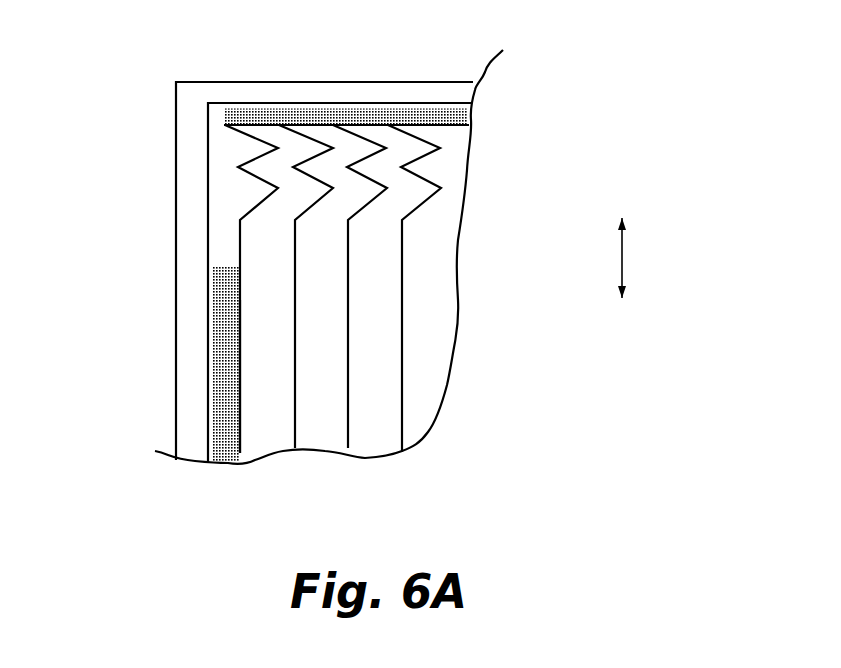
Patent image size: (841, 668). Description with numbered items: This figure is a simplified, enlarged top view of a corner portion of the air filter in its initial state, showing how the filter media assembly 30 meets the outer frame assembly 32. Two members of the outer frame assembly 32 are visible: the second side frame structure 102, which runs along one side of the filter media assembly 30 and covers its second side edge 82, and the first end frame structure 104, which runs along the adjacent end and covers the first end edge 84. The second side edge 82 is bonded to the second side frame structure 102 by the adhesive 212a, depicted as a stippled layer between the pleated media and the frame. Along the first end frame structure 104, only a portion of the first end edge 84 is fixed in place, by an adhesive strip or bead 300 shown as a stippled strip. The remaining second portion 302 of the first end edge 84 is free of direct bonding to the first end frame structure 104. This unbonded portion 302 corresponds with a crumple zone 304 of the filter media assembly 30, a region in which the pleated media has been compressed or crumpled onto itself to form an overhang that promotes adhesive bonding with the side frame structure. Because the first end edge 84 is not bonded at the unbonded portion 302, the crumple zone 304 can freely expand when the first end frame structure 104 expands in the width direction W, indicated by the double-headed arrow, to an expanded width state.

The filter media assembly 30 is at (418, 323).
The outer frame assembly 32 is at (158, 323).
The second side edge 82 is at (448, 125).
The first end edge 84 is at (242, 428).
The second side frame structure 102 is at (385, 75).
The first end frame structure 104 is at (195, 249).
The adhesive 212a is at (447, 111).
The adhesive strip or bead 300 is at (223, 417).
The second portion (unbonded portion) 302 is at (250, 212).
The crumple zone 304 is at (335, 160).
The width direction W is at (622, 255).